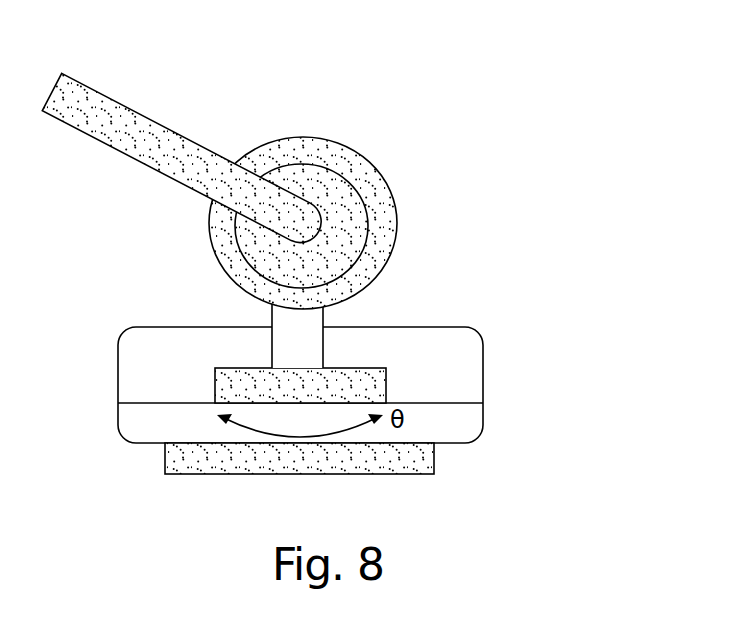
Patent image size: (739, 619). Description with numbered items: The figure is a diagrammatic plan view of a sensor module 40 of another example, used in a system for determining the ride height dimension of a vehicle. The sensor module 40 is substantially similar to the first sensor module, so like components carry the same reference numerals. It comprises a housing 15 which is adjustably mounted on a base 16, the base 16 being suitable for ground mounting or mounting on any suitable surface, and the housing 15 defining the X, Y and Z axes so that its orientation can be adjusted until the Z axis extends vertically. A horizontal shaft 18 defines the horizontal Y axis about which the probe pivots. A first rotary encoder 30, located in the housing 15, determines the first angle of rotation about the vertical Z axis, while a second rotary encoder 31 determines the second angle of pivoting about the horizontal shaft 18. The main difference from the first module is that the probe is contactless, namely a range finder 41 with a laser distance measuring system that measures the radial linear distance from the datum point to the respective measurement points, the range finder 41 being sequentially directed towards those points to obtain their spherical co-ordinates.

The housing 15 is at (152, 337).
The base 16 is at (434, 457).
The horizontal shaft 18 is at (235, 236).
The first rotary encoder 30 is at (386, 372).
The second rotary encoder 31 is at (375, 160).
The sensor module 40 is at (249, 166).
The range finder 41 is at (103, 96).